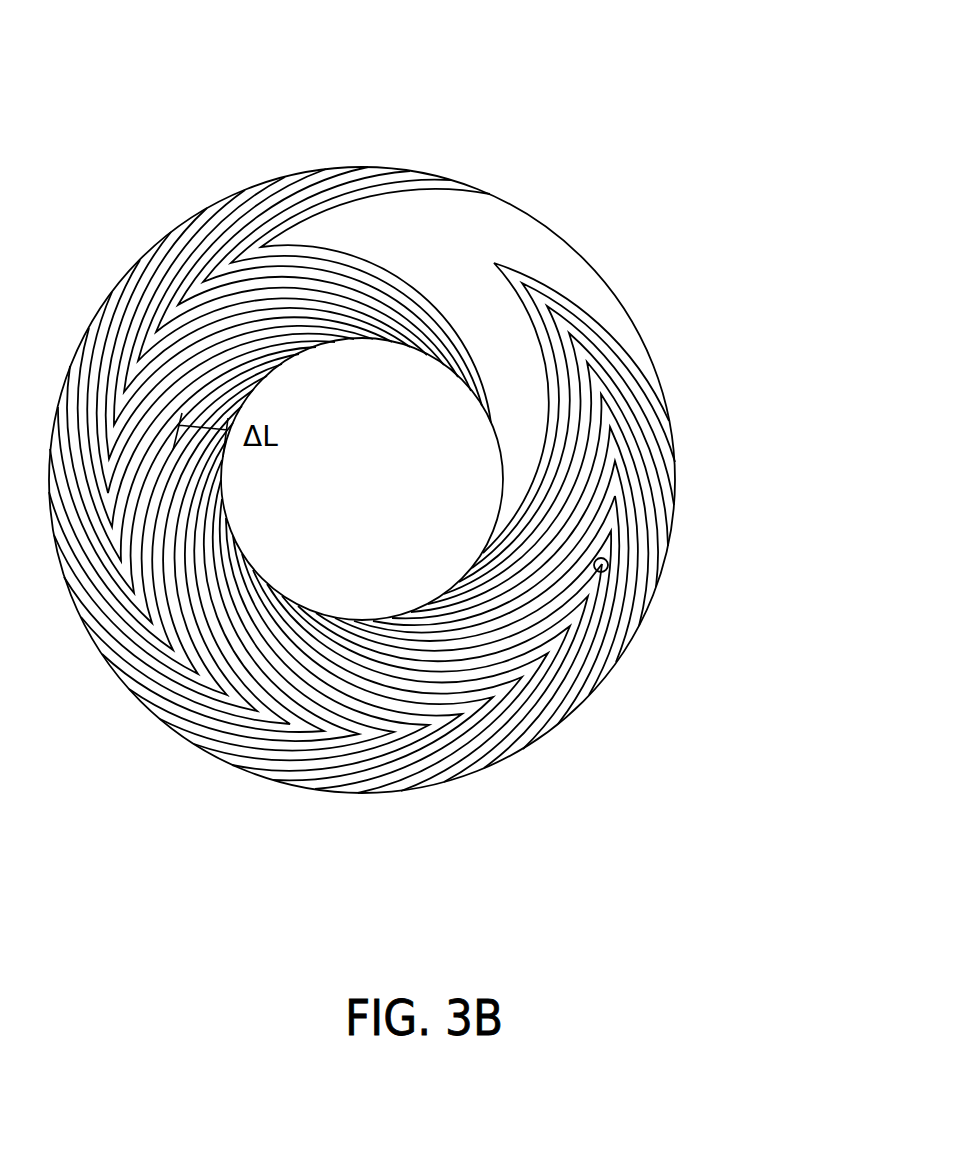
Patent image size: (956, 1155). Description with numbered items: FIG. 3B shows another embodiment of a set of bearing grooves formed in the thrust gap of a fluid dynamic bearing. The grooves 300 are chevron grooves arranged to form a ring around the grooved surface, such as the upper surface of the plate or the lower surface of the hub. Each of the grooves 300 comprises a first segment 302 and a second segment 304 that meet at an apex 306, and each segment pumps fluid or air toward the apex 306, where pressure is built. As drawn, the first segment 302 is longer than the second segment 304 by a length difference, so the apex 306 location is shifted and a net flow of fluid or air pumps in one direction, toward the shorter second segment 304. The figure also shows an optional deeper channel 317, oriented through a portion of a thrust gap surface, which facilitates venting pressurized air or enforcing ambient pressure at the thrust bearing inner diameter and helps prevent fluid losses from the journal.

The grooves 300 is at (663, 323).
The first segment 302 is at (560, 610).
The second segment 304 is at (621, 590).
The apex 306 is at (606, 572).
The deeper channel 317 is at (423, 238).